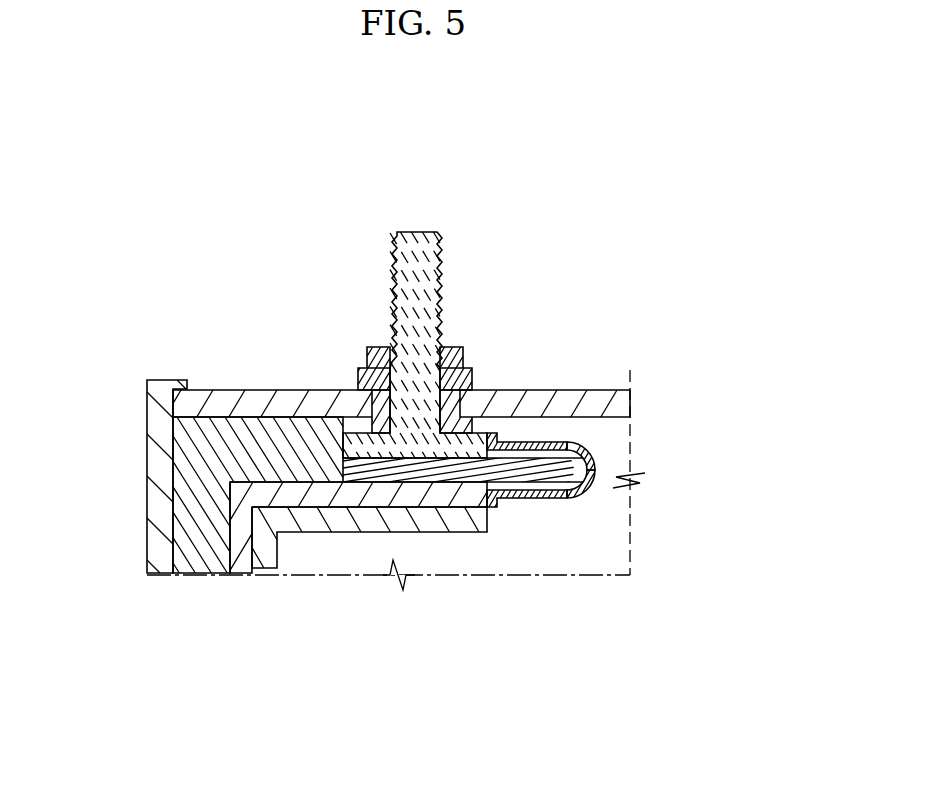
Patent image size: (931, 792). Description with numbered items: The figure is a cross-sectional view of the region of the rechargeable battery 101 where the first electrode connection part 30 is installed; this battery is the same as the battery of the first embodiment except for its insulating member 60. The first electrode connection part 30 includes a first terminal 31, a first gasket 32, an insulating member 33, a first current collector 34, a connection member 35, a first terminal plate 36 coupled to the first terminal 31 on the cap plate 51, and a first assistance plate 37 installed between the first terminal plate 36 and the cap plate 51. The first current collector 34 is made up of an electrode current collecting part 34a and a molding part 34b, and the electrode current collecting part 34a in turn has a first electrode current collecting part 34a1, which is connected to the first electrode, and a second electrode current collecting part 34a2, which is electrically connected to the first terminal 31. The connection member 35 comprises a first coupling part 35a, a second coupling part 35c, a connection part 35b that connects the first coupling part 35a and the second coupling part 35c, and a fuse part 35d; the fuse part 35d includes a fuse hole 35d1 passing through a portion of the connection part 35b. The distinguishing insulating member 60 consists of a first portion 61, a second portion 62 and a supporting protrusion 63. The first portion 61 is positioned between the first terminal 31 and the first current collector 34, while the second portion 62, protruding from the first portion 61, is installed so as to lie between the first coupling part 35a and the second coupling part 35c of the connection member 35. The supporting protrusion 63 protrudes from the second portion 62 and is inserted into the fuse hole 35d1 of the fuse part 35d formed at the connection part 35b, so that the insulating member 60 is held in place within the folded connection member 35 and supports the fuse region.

The rechargeable battery 101 is at (190, 163).
The first electrode connection part 30 is at (750, 180).
The first terminal 31 is at (417, 247).
The first gasket 32 is at (362, 419).
The insulating member 33 is at (516, 405).
The first current collector 34 is at (85, 290).
The electrode current collecting part 34a is at (185, 660).
The first electrode current collecting part 34a1 is at (240, 543).
The second electrode current collecting part 34a2 is at (350, 497).
The molding part 34b is at (200, 467).
The connection member 35 is at (750, 600).
The first coupling part 35a is at (548, 442).
The connection part 35b is at (590, 445).
The second coupling part 35c is at (580, 493).
The fuse part 35d is at (592, 458).
The fuse hole 35d1 is at (597, 468).
The first terminal plate 36 is at (371, 347).
The first assistance plate 37 is at (473, 385).
The cap plate 51 is at (542, 402).
The insulating member 60 is at (580, 660).
The first portion 61 is at (447, 467).
The second portion 62 is at (525, 468).
The supporting protrusion 63 is at (558, 477).